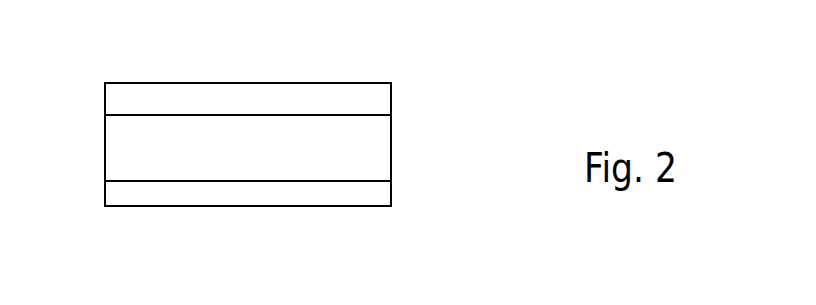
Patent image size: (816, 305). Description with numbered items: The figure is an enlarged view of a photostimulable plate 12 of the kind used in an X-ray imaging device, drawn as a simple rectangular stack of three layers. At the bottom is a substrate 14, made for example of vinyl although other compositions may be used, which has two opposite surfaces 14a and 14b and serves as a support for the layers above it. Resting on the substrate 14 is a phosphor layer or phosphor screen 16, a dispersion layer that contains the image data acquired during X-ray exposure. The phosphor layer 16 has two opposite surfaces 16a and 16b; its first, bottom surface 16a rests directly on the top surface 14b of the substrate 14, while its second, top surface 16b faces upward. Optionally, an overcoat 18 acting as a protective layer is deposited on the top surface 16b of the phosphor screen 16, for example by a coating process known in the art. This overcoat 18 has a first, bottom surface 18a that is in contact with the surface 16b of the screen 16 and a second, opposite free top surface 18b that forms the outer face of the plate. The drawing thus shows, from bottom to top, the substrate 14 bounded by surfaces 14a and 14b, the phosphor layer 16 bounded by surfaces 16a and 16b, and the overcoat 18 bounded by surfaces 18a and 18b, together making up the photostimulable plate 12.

The photostimulable plate 12 is at (85, 86).
The substrate 14 is at (391, 202).
The bottom surface of substrate 14a is at (340, 206).
The top surface of substrate 14b is at (380, 181).
The phosphor layer 16 is at (391, 143).
The first surface of phosphor layer 16a is at (118, 181).
The second surface of phosphor layer 16b is at (114, 115).
The overcoat 18 is at (391, 97).
The first surface of overcoat 18a is at (384, 116).
The second free surface of overcoat 18b is at (335, 83).